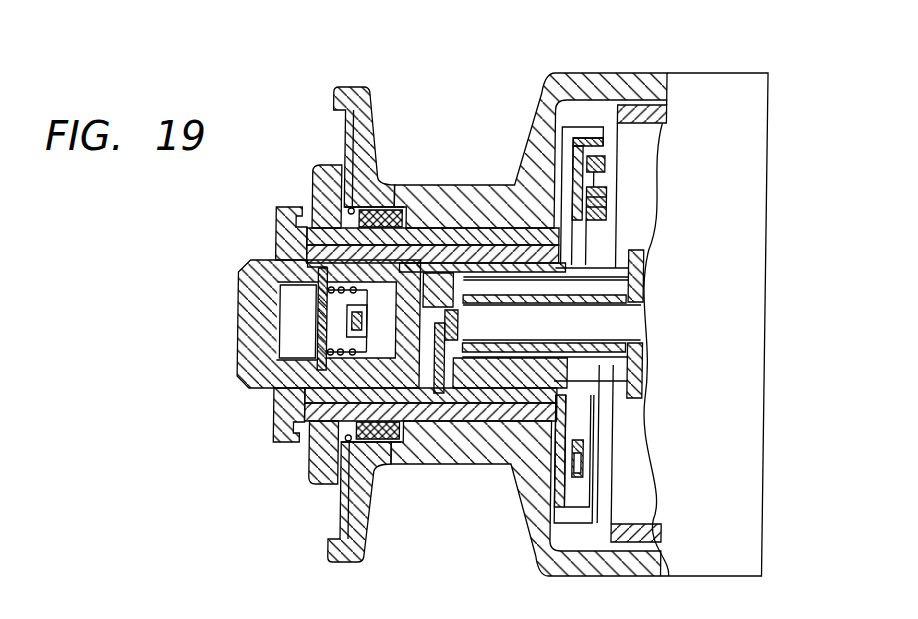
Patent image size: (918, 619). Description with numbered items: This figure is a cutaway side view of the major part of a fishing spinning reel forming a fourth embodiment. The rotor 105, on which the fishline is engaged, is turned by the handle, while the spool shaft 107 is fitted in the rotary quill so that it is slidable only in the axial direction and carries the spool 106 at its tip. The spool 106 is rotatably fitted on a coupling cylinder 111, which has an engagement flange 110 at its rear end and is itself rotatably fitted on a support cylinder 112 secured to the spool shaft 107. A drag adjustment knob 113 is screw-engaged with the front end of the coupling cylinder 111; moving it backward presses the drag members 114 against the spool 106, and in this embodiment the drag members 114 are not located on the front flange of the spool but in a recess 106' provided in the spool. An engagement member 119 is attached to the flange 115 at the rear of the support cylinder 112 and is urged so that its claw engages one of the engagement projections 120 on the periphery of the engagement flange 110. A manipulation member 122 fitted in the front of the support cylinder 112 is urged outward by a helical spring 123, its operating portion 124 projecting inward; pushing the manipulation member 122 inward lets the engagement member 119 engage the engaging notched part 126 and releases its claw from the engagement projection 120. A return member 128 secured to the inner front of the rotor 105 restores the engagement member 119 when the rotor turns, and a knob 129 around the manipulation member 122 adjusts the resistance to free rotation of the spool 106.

The rotor 105 is at (655, 529).
The spool 106 is at (384, 511).
The recess 106' is at (375, 157).
The spool shaft 107 is at (633, 320).
The engagement flange 110 is at (566, 130).
The coupling cylinder 111 is at (432, 235).
The support cylinder 112 is at (450, 400).
The drag adjustment knob 113 is at (317, 167).
The drag members 114 is at (385, 445).
The flange 115 is at (578, 462).
The engagement member 119 is at (598, 164).
The engagement projections 120 is at (590, 136).
The manipulation member 122 is at (250, 326).
The helical spring 123 is at (298, 300).
The operating portion 124 is at (475, 265).
The engaging notched part 126 is at (595, 242).
The return member 128 is at (497, 352).
The knob 129 is at (280, 213).